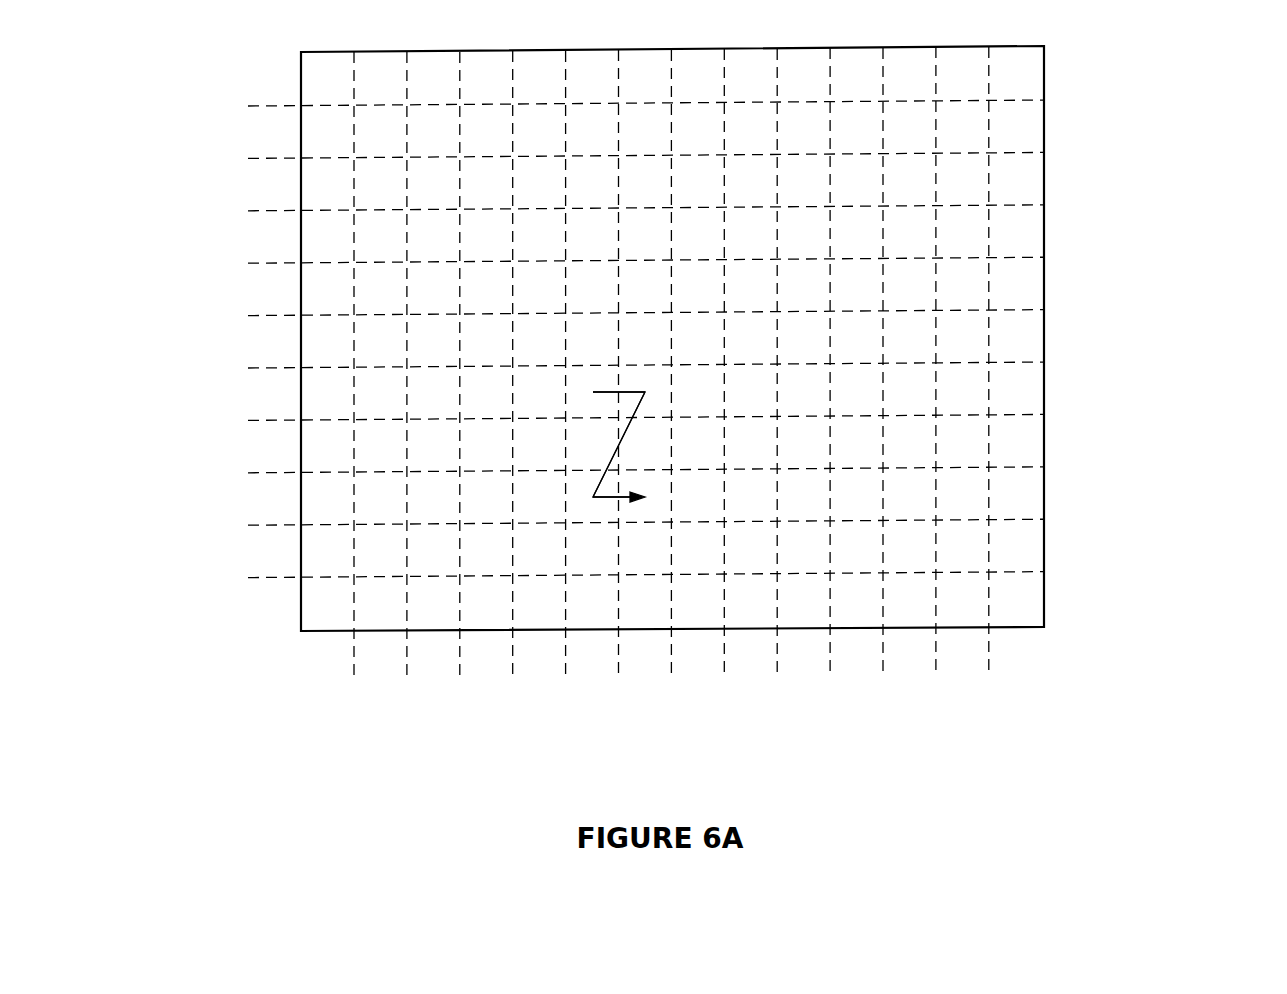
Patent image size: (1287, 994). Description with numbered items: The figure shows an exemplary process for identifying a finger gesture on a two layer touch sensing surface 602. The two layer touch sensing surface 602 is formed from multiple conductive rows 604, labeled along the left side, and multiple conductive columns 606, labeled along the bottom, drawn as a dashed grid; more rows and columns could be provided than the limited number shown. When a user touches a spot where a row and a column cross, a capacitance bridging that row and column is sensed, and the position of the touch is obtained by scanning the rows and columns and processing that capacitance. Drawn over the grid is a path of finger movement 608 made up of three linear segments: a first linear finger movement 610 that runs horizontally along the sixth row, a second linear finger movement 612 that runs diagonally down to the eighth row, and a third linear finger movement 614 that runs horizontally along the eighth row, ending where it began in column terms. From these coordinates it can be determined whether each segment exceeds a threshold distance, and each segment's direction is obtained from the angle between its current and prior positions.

The two layer touch sensing surface 602 is at (1044, 598).
The conductive rows 604 is at (248, 55).
The conductive columns 606 is at (307, 683).
The path of finger movement 608 is at (645, 498).
The first linear finger movement 610 is at (617, 367).
The second linear finger movement 612 is at (623, 440).
The third linear finger movement 614 is at (600, 498).